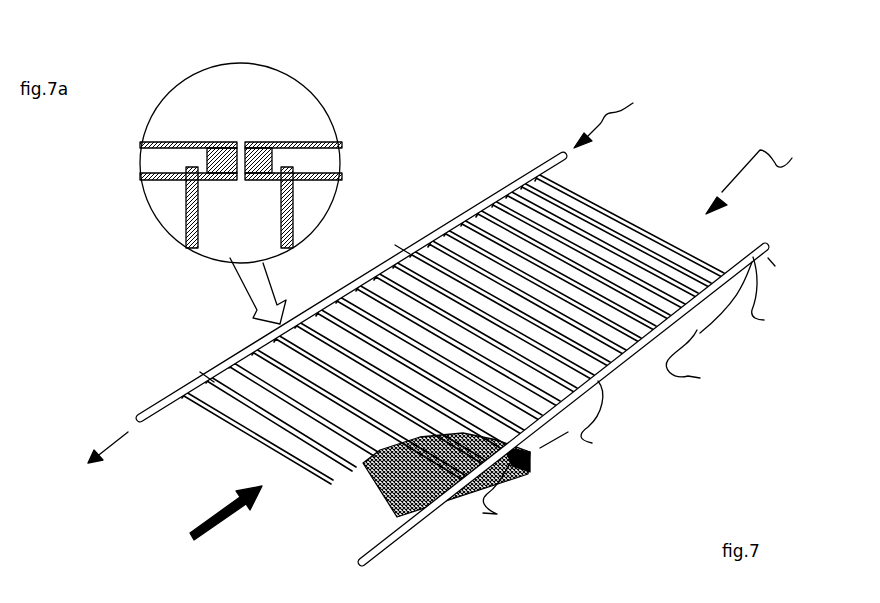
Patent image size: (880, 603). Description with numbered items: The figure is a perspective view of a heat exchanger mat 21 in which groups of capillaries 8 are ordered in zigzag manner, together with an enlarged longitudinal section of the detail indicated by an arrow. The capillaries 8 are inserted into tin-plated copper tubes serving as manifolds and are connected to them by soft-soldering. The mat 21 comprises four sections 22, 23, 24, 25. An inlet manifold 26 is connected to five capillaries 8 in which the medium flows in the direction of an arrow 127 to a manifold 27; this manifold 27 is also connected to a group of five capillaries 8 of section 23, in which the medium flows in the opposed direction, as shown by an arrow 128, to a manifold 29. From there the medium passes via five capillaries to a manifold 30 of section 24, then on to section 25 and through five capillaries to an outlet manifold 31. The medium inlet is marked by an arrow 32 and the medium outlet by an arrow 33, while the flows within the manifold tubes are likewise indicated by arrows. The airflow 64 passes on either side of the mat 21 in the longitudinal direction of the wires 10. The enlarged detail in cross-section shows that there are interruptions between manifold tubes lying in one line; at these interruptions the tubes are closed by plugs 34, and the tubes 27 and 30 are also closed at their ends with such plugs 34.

In FIG. 7A, the capillaries 8 is at (190, 232).
In FIG. 7, the capillaries 8 is at (530, 280).
In FIG. 7, the wires 10 is at (382, 480).
In FIG. 7, the heat exchanger mat 21 is at (760, 180).
In FIG. 7, the section 22 is at (742, 295).
In FIG. 7, the section 23 is at (629, 389).
In FIG. 7, the section 24 is at (600, 418).
In FIG. 7, the section 25 is at (502, 491).
In FIG. 7, the inlet manifold 26 is at (502, 192).
In FIG. 7, the manifold 27 is at (770, 262).
In FIG. 7A, the manifold 29 is at (258, 153).
In FIG. 7, the manifold 29 is at (404, 250).
In FIG. 7, the manifold 30 is at (563, 404).
In FIG. 7A, the outlet manifold 31 is at (170, 157).
In FIG. 7, the outlet manifold 31 is at (208, 378).
In FIG. 7, the arrow 32 is at (614, 117).
In FIG. 7, the arrow 33 is at (100, 432).
In FIG. 7A, the plugs 34 is at (228, 153).
In FIG. 7, the airflow 64 is at (187, 535).
In FIG. 7, the arrow 127 is at (613, 242).
In FIG. 7, the arrow 128 is at (455, 222).